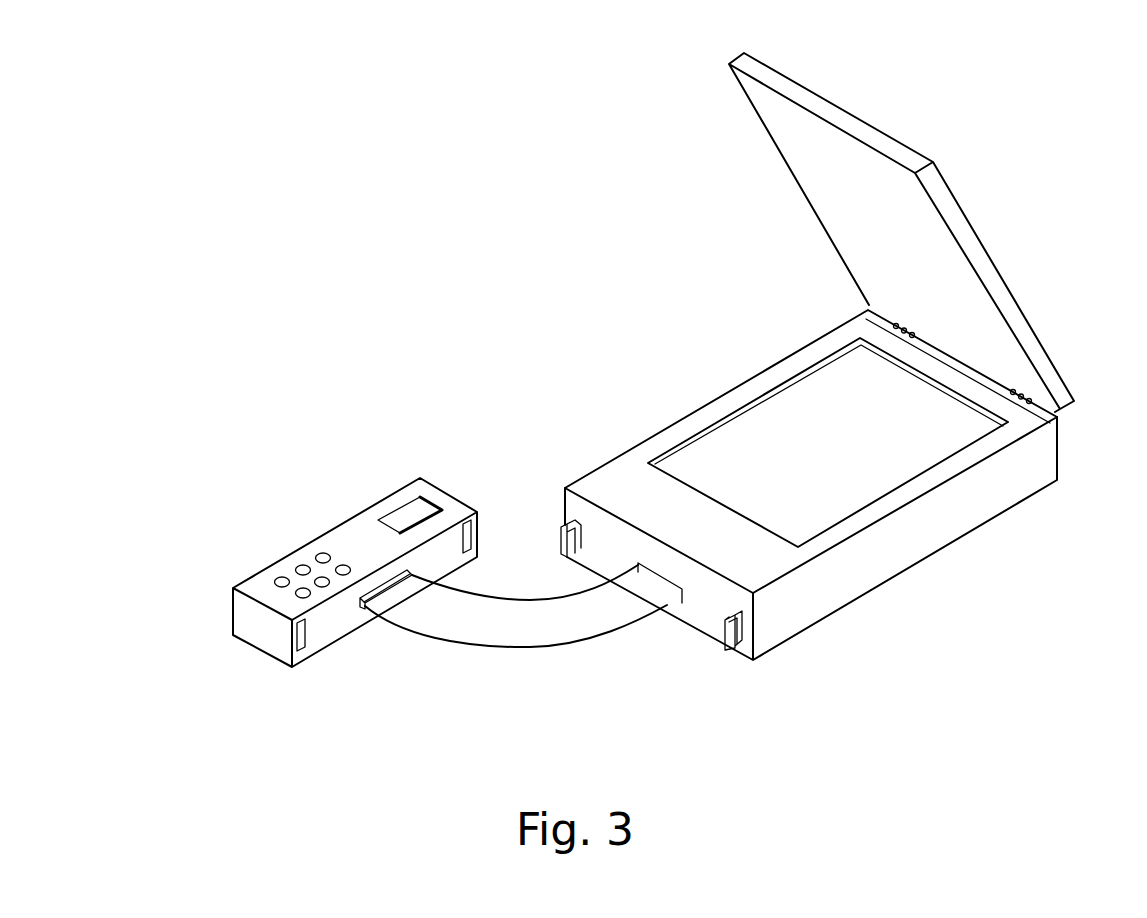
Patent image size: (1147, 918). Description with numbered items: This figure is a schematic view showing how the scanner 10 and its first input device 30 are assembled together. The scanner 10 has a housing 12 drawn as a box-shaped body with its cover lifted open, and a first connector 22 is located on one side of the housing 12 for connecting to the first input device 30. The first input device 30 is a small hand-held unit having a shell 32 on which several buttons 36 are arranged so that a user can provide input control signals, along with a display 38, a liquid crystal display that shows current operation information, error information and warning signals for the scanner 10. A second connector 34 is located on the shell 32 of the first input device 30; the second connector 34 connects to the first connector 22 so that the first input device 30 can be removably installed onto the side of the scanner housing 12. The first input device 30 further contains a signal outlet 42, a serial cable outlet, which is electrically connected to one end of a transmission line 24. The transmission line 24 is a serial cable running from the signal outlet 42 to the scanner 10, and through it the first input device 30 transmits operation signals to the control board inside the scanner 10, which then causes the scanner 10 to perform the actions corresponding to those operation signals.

The scanner 10 is at (445, 105).
The housing 12 is at (1015, 482).
The first connector 22 is at (730, 642).
The transmission line 24 is at (498, 632).
The first input device 30 is at (360, 423).
The shell 32 is at (255, 588).
The second connector 34 is at (302, 640).
The buttons 36 is at (300, 548).
The display 38 is at (412, 513).
The signal outlet 42 is at (363, 607).